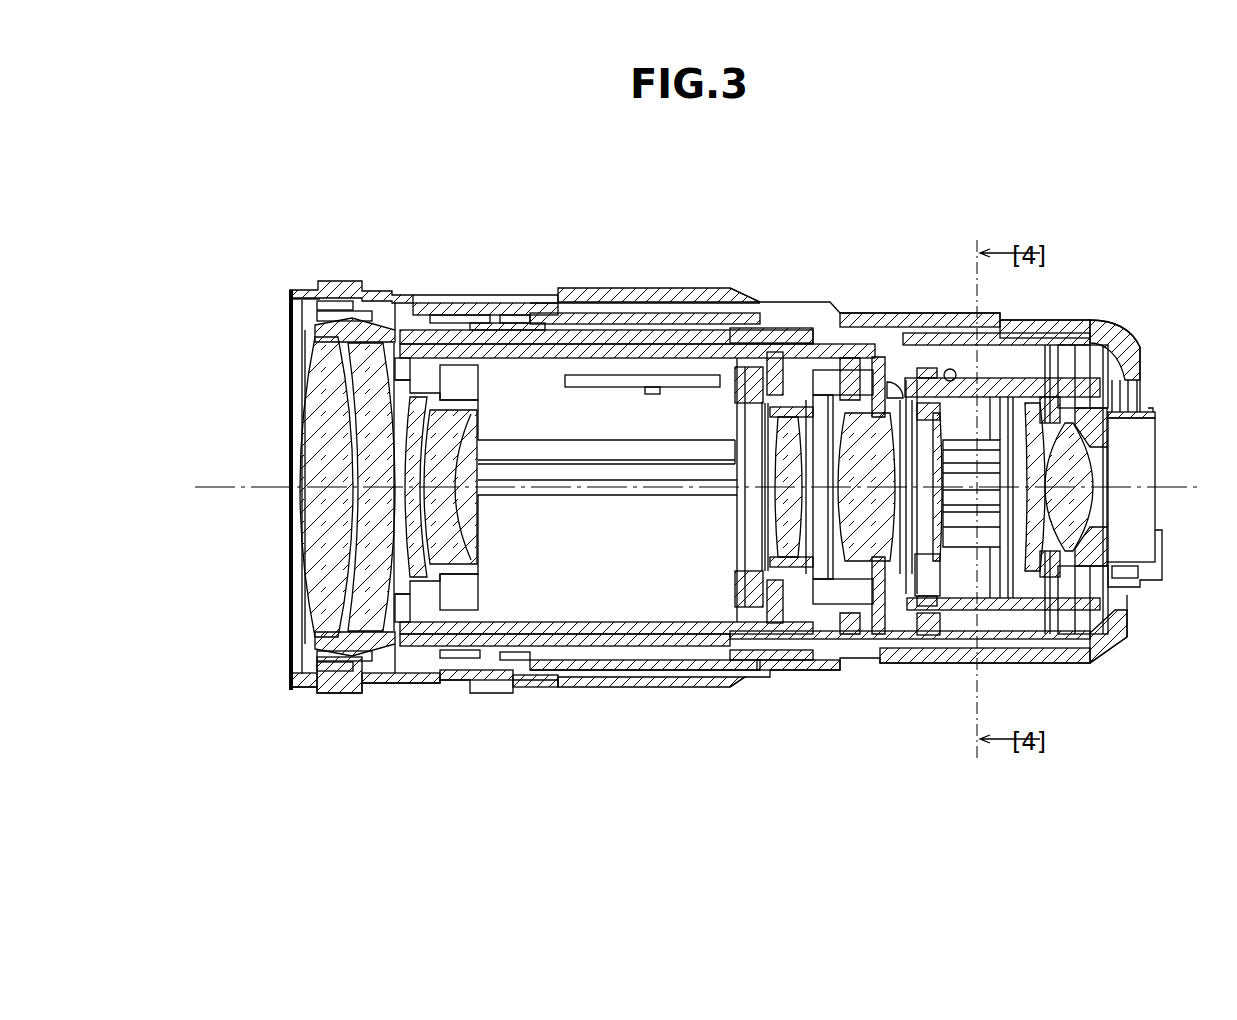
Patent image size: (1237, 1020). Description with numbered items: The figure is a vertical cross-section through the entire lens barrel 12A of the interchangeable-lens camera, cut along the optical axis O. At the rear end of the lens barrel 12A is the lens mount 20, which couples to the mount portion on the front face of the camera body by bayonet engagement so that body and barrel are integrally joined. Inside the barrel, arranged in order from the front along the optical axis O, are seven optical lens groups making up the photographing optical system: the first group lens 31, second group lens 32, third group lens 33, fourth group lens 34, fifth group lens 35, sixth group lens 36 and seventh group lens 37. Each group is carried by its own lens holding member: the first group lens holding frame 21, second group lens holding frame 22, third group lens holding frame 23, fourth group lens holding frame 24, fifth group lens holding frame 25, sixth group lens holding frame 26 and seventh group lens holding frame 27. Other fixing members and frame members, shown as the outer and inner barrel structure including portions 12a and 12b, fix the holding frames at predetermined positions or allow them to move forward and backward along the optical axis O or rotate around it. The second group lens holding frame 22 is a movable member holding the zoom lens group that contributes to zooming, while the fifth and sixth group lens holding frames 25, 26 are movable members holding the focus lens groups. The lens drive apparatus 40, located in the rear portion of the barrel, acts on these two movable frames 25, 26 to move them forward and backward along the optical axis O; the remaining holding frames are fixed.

The lens barrel 12A is at (822, 212).
The focus ring 12a is at (472, 290).
The zoom ring 12b is at (636, 288).
The lens mount 20 is at (1160, 586).
The first group lens holding frame 21 is at (377, 630).
The second group lens holding frame 22 is at (460, 630).
The third group lens holding frame 23 is at (806, 565).
The fourth group lens holding frame 24 is at (838, 580).
The fifth group lens holding frame 25 is at (945, 600).
The sixth group lens holding frame 26 is at (1047, 480).
The seventh group lens holding frame 27 is at (1058, 600).
The first group lens 31 is at (337, 583).
The second group lens 32 is at (433, 597).
The third group lens 33 is at (783, 565).
The fourth group lens 34 is at (860, 590).
The fifth group lens 35 is at (930, 575).
The sixth group lens 36 is at (1013, 530).
The seventh group lens 37 is at (1107, 560).
The lens drive apparatus 40 is at (1050, 303).
The optical axis O is at (200, 487).